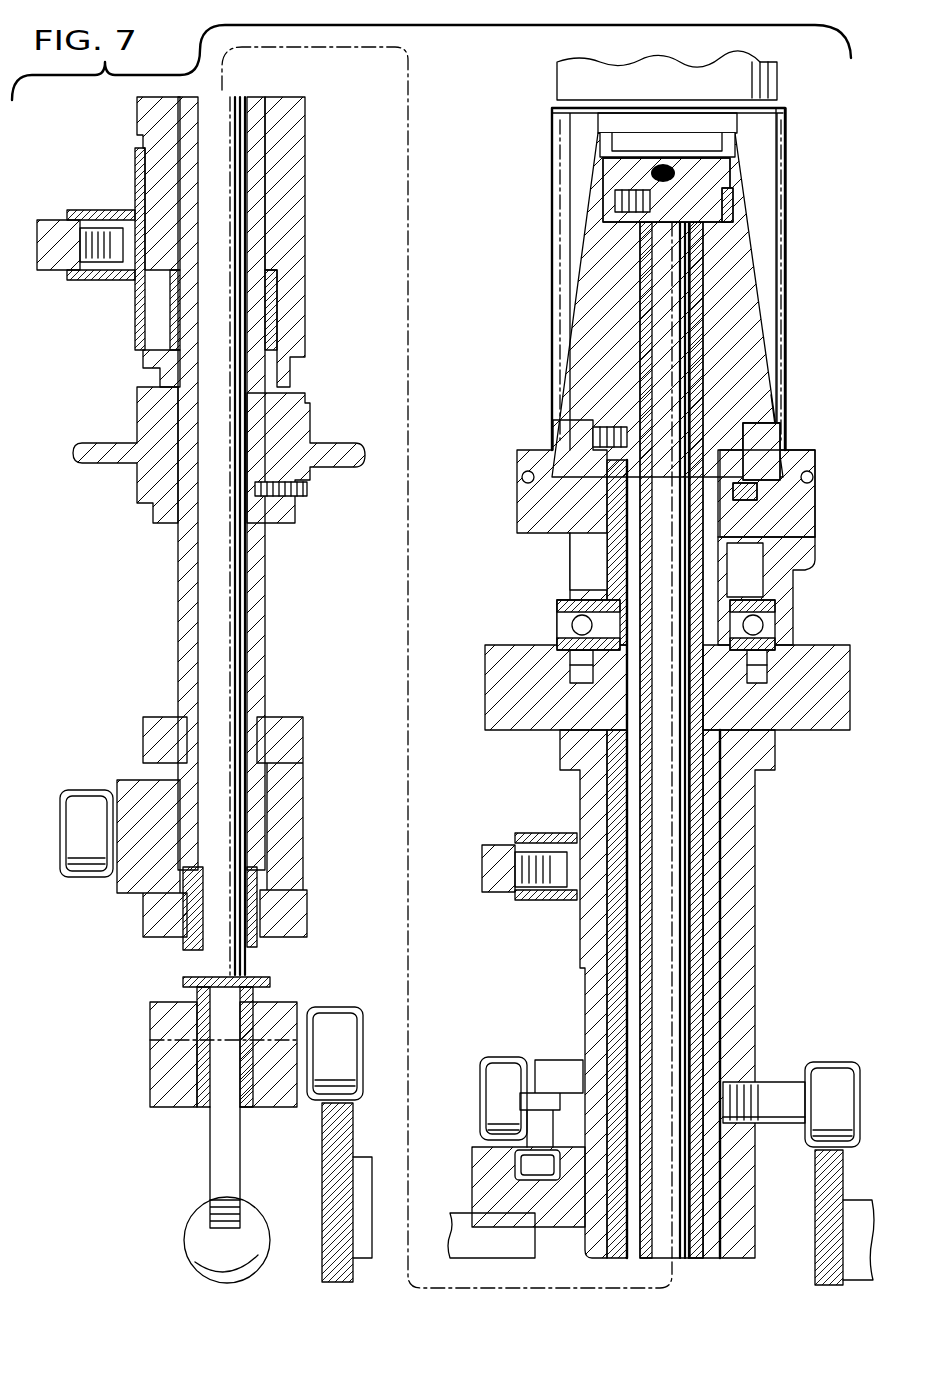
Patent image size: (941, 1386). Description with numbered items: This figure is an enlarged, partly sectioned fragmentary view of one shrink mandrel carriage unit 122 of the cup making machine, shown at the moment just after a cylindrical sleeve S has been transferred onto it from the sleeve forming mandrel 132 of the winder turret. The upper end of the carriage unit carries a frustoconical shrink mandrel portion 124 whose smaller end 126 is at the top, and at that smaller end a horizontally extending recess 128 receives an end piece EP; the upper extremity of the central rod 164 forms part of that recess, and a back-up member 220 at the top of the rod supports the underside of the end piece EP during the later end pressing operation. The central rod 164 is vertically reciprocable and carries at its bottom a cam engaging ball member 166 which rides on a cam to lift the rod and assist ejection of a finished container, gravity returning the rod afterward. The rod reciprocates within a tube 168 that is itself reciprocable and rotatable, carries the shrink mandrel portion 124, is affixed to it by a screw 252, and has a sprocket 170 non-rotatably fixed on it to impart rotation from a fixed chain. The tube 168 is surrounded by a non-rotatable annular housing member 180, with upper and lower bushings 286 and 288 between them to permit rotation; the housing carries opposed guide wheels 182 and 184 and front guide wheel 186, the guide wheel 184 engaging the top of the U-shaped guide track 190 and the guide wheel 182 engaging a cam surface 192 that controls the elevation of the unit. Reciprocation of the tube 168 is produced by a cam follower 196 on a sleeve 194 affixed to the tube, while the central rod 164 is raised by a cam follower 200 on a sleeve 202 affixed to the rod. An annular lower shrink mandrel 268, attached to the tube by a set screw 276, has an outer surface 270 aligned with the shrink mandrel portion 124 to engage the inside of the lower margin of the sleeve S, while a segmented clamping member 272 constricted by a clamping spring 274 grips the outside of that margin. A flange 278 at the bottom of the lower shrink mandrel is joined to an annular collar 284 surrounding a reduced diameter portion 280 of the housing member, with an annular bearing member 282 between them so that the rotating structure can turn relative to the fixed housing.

The shrink mandrel carriage unit 122 is at (520, 586).
The shrink mandrel portion 124 is at (760, 313).
The smaller end 126 is at (740, 130).
The horizontally extending recess 128 is at (613, 120).
The sleeve forming mandrel 132 is at (778, 77).
The central rod 164 is at (220, 620).
The cam engaging ball member 166 is at (253, 1237).
The tube 168 is at (183, 607).
The sprocket 170 is at (90, 457).
The annular housing member 180 is at (302, 183).
The guide wheel 182 is at (827, 1078).
The guide wheel 184 is at (495, 1066).
The front guide wheel 186 is at (556, 1185).
The guide track 190 is at (482, 1172).
The cam surface 192 is at (828, 1174).
The sleeve 194 is at (297, 834).
The cam follower 196 is at (87, 798).
The cam follower 200 is at (338, 1013).
The sleeve 202 is at (162, 1032).
The back-up member 220 is at (705, 200).
The screw 252 is at (577, 437).
The lower shrink mandrel 268 is at (775, 448).
The outer surface 270 is at (772, 415).
The segmented clamping member 272 is at (760, 476).
The clamping spring 274 is at (809, 477).
The set screw 276 is at (785, 512).
The flange 278 is at (785, 536).
The reduced diameter portion 280 is at (770, 655).
The annular bearing member 282 is at (770, 612).
The annular collar 284 is at (788, 578).
The upper bushing 286 is at (718, 718).
The lower bushing 288 is at (300, 308).
The cylindrical sleeve S is at (783, 255).
The end piece EP is at (730, 150).